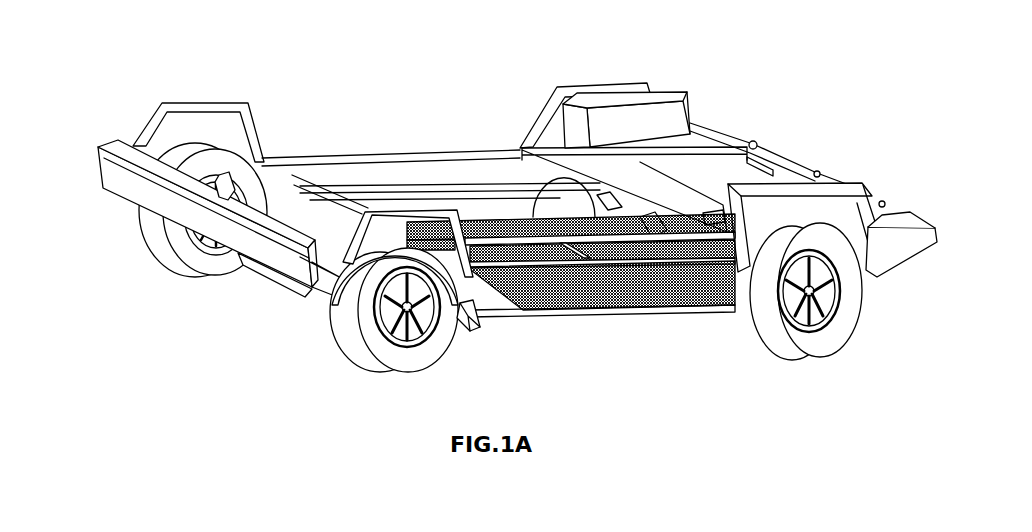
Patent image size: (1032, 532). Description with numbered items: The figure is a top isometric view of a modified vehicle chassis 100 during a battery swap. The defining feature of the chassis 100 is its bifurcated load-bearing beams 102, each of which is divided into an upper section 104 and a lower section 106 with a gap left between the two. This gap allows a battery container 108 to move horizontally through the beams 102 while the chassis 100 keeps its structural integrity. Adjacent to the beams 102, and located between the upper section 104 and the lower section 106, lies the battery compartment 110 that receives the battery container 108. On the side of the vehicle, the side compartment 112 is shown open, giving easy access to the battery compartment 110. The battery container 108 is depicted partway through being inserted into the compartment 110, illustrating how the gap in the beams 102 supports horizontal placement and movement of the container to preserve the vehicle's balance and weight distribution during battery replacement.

The modified vehicle chassis 100 is at (517, 215).
The bifurcated load-bearing beams 102 is at (766, 325).
The upper section 104 is at (490, 238).
The lower section 106 is at (466, 331).
The battery container 108 is at (623, 300).
The battery compartment 110 is at (525, 208).
The side compartment 112 is at (505, 305).